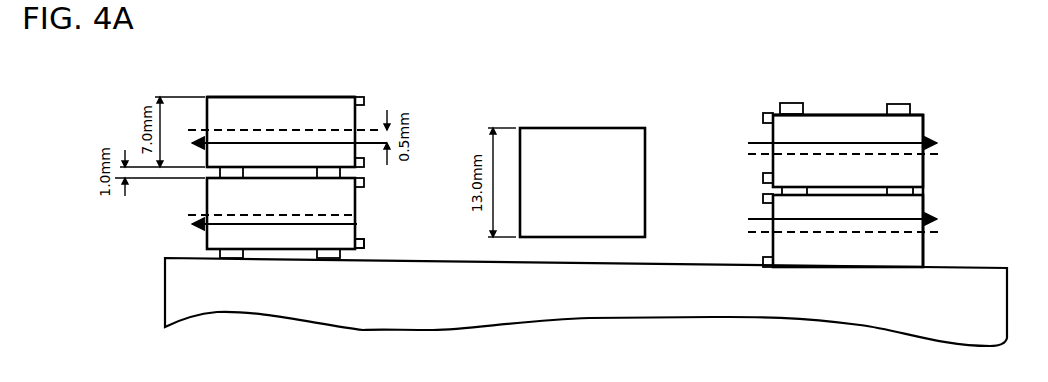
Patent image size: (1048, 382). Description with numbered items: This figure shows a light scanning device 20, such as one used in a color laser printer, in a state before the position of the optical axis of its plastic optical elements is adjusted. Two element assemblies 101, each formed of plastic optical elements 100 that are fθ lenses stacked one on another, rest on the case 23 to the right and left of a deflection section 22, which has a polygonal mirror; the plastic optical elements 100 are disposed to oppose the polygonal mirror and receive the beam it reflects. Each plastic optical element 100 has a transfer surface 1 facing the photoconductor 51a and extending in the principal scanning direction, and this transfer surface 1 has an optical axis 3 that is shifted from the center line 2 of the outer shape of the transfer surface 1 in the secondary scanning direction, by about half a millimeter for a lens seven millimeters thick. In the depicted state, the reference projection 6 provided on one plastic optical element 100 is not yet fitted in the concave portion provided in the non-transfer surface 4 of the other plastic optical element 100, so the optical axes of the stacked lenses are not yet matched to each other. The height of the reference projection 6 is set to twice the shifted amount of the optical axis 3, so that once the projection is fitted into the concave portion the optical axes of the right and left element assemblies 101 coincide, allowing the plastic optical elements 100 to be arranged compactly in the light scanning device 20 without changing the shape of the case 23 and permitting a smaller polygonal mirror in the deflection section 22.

The transfer surface 1 is at (357, 222).
The center line 2 is at (222, 130).
The optical axis 3 is at (222, 143).
The non-transfer surface 4 is at (311, 258).
The reference projection 6 is at (320, 172).
The light scanning device 20 is at (944, 82).
The deflection section 22 is at (618, 128).
The case 23 is at (689, 318).
The photoconductor 51a is at (364, 244).
The plastic optical element 100 is at (298, 97).
The element assembly 101 is at (265, 82).